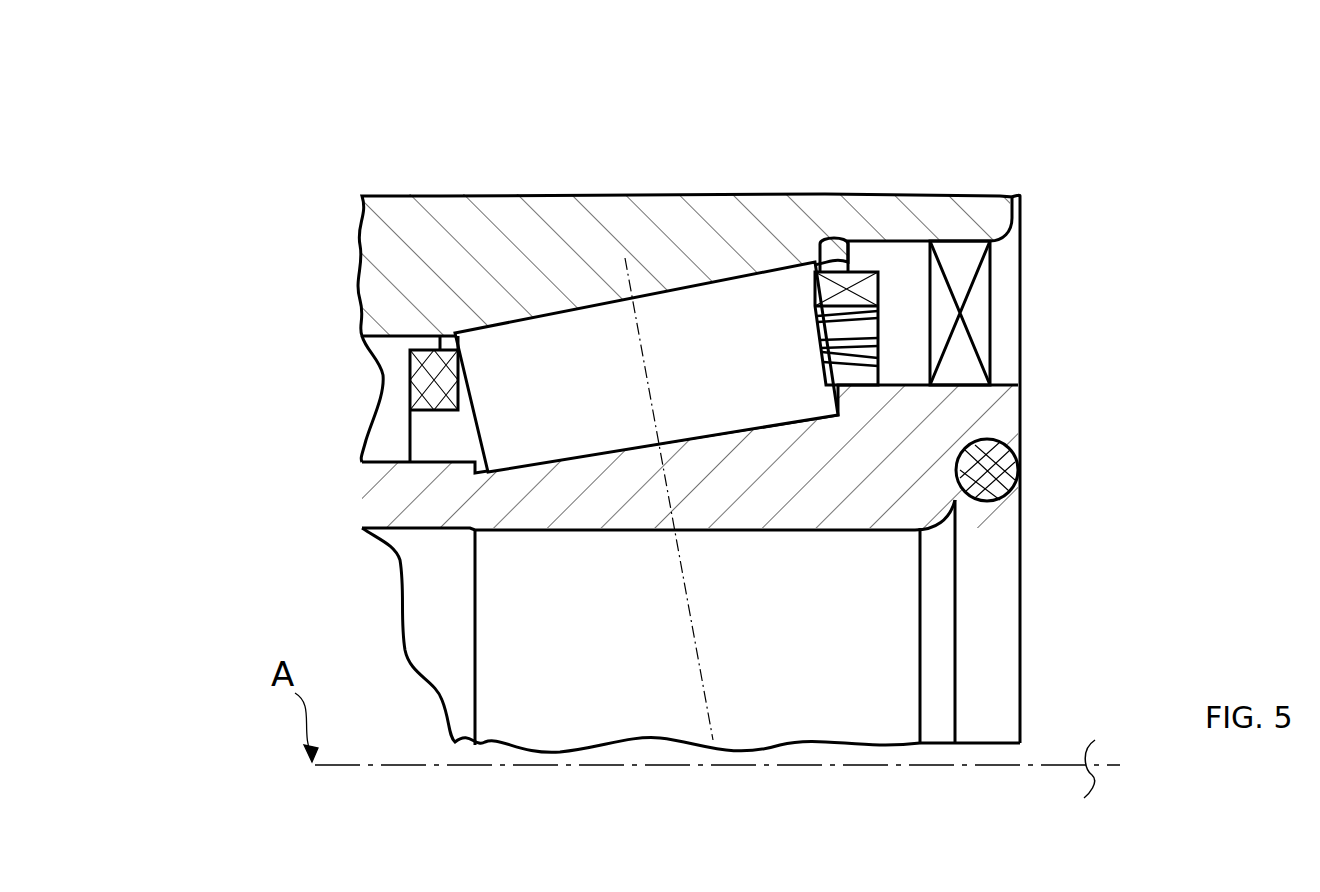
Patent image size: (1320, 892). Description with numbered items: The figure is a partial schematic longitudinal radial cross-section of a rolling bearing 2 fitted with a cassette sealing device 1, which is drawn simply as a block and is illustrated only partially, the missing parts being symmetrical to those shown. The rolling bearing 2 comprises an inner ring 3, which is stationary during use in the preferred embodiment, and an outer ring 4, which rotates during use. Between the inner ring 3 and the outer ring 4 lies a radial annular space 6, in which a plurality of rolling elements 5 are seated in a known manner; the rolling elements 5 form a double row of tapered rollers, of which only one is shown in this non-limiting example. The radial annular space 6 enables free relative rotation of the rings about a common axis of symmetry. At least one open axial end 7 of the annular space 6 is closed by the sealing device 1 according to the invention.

The cassette sealing device 1 is at (968, 320).
The rolling bearing 2 is at (882, 136).
The inner ring 3 is at (750, 493).
The outer ring 4 is at (513, 223).
The rolling elements 5 is at (590, 410).
The radial annular space 6 is at (383, 372).
The open axial end 7 is at (907, 342).